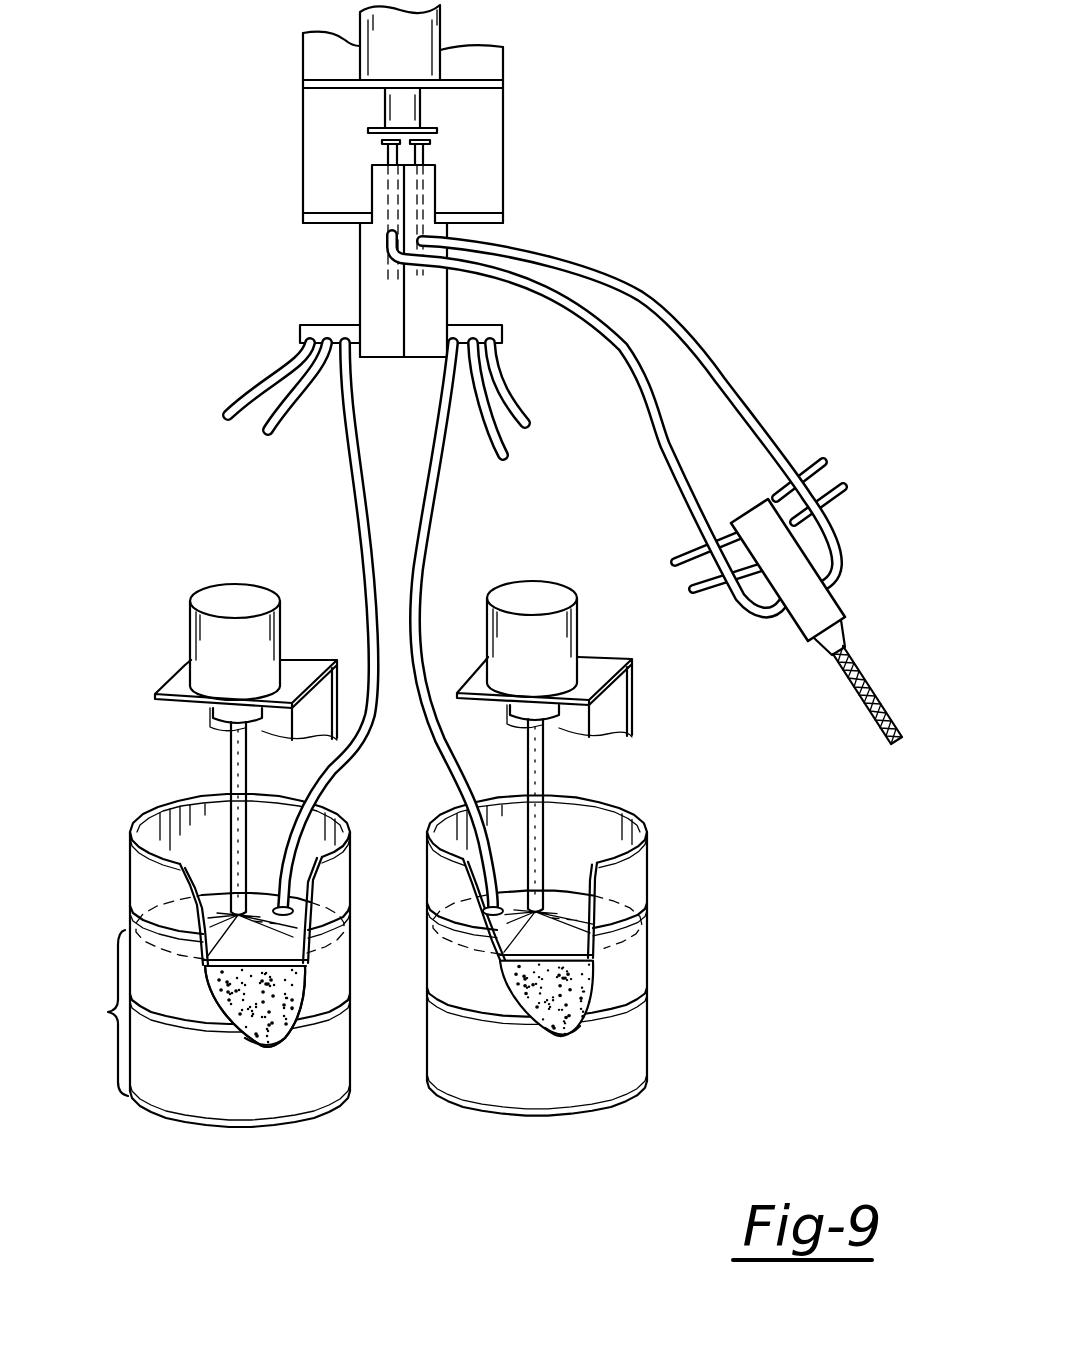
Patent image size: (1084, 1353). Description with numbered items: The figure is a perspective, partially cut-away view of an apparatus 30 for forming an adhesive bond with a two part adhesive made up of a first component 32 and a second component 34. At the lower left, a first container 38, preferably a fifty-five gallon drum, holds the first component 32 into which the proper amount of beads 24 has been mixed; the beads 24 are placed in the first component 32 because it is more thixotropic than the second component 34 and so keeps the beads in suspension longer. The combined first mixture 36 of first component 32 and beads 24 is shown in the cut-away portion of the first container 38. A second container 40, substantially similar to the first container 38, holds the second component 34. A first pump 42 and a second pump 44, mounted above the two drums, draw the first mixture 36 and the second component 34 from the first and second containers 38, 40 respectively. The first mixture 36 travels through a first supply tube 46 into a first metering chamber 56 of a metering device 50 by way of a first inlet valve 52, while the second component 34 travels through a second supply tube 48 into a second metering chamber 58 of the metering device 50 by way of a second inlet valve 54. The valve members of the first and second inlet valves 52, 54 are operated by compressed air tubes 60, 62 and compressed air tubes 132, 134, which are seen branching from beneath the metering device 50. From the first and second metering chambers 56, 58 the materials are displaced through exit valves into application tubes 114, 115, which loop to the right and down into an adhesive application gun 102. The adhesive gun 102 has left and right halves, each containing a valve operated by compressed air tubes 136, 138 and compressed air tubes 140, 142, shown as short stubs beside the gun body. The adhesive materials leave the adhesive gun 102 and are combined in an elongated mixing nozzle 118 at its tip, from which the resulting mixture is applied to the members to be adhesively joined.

The apparatus 30 is at (610, 130).
The first metering chamber 56 is at (373, 298).
The second metering chamber 58 is at (418, 315).
The metering device 50 is at (404, 358).
The first inlet valve 52 is at (300, 328).
The second inlet valve 54 is at (487, 324).
The application tube 115 is at (732, 352).
The application tube 114 is at (658, 437).
The compressed air tube 138 is at (686, 556).
The compressed air tube 136 is at (724, 594).
The compressed air tube 142 is at (808, 464).
The compressed air tube 140 is at (836, 506).
The adhesive application gun 102 is at (842, 600).
The elongated mixing nozzle 118 is at (888, 704).
The compressed air tube 62 is at (222, 411).
The compressed air tube 60 is at (292, 401).
The compressed air tube 132 is at (485, 450).
The compressed air tube 134 is at (497, 368).
The first pump 42 is at (190, 622).
The second pump 44 is at (533, 583).
The first mixture 36 is at (201, 980).
The first container 38 is at (158, 1118).
The beads 24 is at (293, 1001).
The first component 32 is at (277, 1033).
The second container 40 is at (660, 1050).
The second component 34 is at (562, 1025).
The first supply tube 46 is at (359, 545).
The second supply tube 48 is at (437, 502).